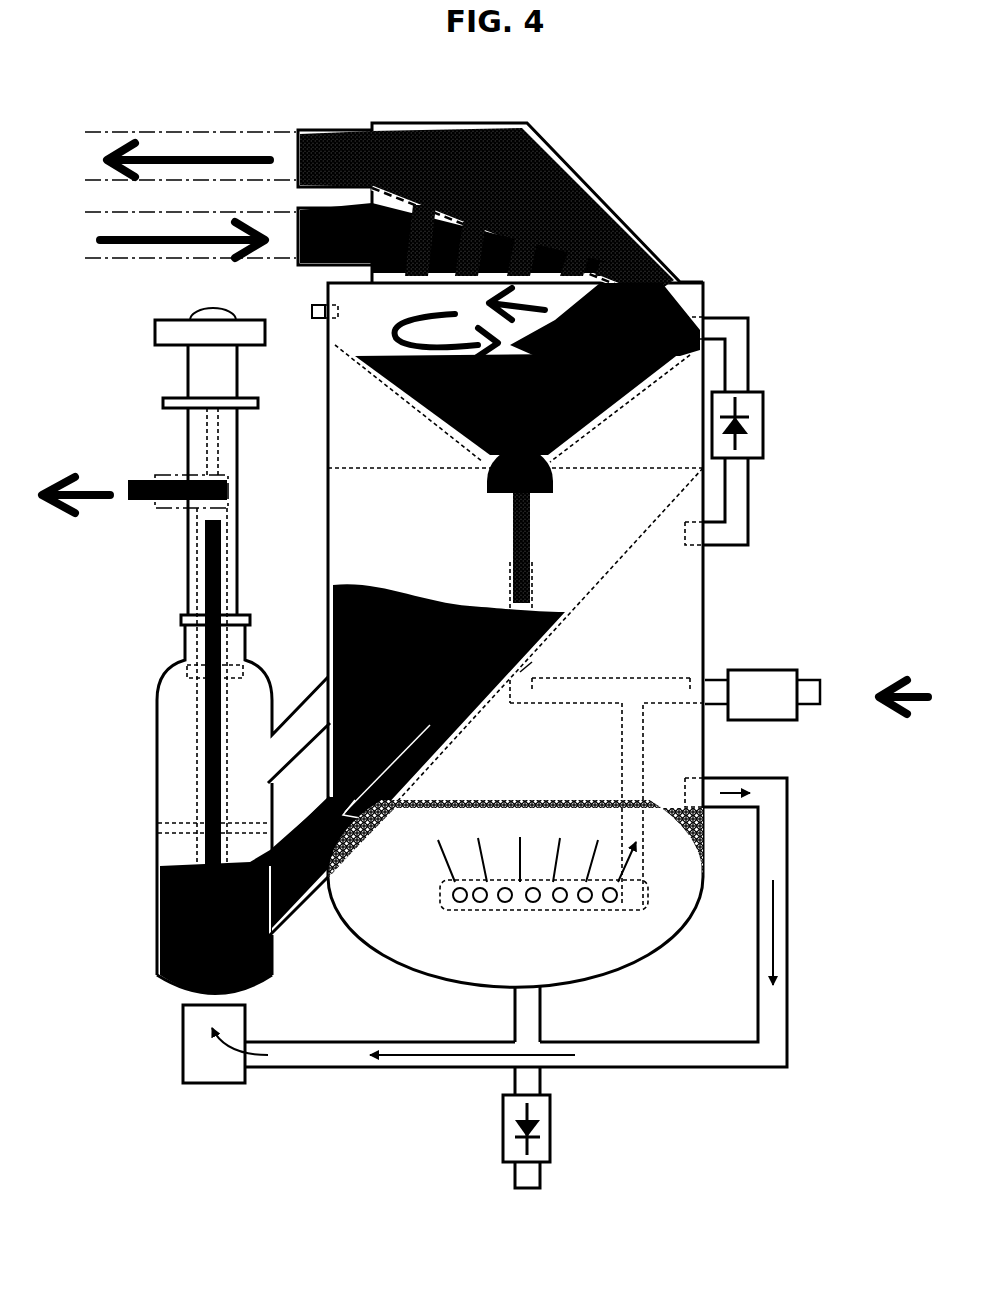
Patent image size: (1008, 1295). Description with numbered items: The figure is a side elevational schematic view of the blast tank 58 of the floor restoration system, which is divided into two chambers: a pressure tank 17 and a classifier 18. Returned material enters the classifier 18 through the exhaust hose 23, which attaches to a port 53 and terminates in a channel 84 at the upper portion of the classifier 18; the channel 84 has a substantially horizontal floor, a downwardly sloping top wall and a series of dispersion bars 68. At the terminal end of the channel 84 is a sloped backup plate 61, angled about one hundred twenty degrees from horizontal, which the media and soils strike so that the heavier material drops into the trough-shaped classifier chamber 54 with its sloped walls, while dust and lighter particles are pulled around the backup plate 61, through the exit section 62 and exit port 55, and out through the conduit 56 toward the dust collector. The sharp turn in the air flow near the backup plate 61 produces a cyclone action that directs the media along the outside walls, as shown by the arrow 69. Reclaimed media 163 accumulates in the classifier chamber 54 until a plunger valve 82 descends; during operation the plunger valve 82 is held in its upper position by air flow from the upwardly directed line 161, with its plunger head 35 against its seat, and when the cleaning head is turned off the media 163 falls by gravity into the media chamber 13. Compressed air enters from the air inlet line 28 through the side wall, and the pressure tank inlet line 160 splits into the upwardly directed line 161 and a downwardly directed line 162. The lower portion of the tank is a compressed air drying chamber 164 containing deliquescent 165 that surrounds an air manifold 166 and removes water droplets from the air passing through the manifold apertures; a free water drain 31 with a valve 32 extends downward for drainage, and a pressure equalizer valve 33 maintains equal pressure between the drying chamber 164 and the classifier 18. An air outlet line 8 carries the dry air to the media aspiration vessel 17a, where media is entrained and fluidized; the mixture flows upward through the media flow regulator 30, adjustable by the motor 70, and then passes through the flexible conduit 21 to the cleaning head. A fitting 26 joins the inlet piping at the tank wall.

The air outlet line 8 is at (683, 1062).
The media chamber 13 is at (345, 534).
The pressure tank 17 is at (350, 487).
The media aspiration vessel 17a is at (160, 797).
The classifier 18 is at (325, 320).
The flexible conduit 21 is at (172, 476).
The exhaust hose 23 is at (180, 260).
The fitting 26 is at (775, 703).
The air inlet line 28 is at (822, 677).
The media flow regulator 30 is at (160, 975).
The free water drain 31 is at (540, 1018).
The valve 32 is at (550, 1138).
The pressure equalizer valve 33 is at (761, 426).
The plunger head 35 is at (560, 479).
The port 53 is at (302, 268).
The classifier chamber 54 is at (422, 418).
The exit port 55 is at (336, 133).
The conduit 56 is at (198, 147).
The blast tank 58 is at (520, 204).
The backup plate 61 is at (626, 243).
The exit section 62 is at (536, 146).
The dispersion bars 68 is at (571, 319).
The arrow 69 is at (392, 345).
The motor 70 is at (166, 340).
The plunger valve 82 is at (531, 541).
The channel 84 is at (389, 277).
The pressure tank inlet line 160 is at (688, 680).
The upwardly directed line 161 is at (534, 665).
The downwardly directed line 162 is at (628, 752).
The particulate matter 163 is at (416, 603).
The compressed air drying chamber 164 is at (686, 600).
The deliquescent 165 is at (410, 944).
The air manifold 166 is at (632, 930).